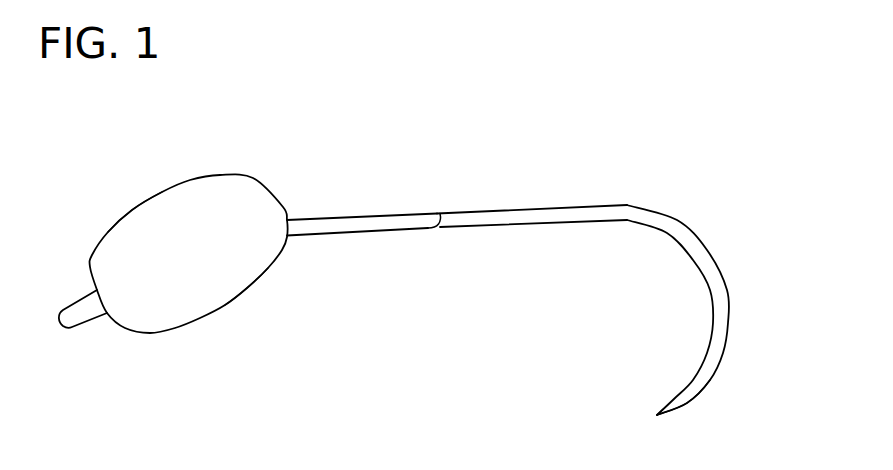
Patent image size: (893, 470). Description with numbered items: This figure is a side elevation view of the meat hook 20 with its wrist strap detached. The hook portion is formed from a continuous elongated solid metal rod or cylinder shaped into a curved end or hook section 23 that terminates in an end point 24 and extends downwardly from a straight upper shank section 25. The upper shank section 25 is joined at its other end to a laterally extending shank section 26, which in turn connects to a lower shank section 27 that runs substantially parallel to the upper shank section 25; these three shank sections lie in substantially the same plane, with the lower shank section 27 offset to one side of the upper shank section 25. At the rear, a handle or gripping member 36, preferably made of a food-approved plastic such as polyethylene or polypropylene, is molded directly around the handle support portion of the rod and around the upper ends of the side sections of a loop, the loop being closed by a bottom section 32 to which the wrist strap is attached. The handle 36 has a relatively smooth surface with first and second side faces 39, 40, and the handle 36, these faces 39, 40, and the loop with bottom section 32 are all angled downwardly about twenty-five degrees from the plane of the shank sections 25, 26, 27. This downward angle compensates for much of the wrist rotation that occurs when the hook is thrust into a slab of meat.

The meat hook 20 is at (545, 120).
The curved end or hook section 23 is at (722, 292).
The end point 24 is at (697, 385).
The upper shank section 25 is at (520, 208).
The laterally extending shank section 26 is at (428, 228).
The lower shank section 27 is at (330, 217).
The bottom section 32 is at (85, 310).
The handle or gripping member 36 is at (168, 218).
The first side face 39 is at (132, 210).
The second side face 40 is at (230, 265).